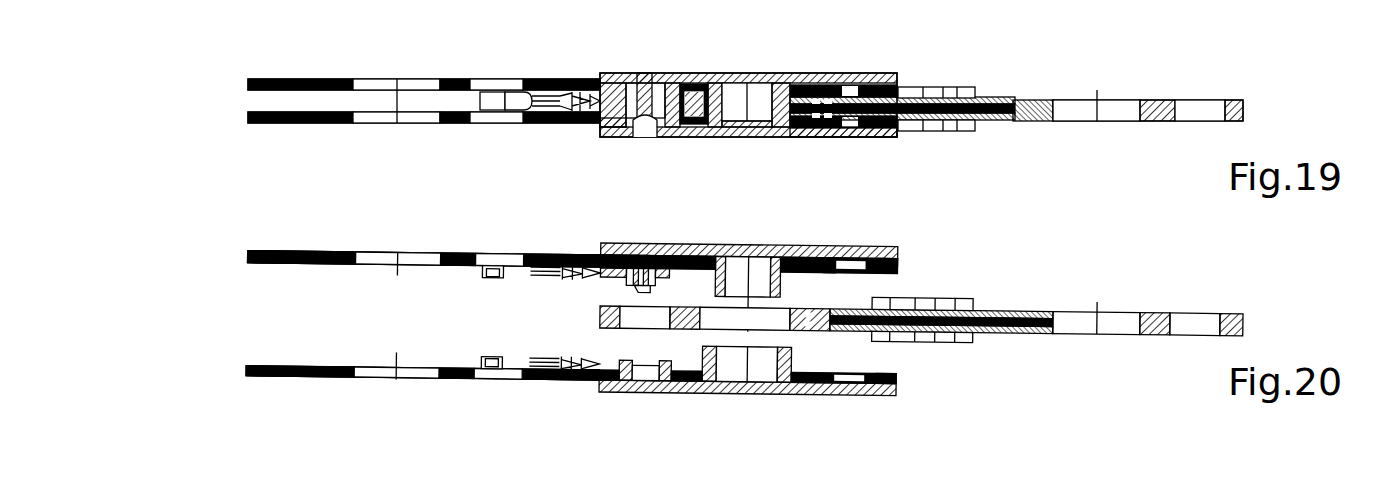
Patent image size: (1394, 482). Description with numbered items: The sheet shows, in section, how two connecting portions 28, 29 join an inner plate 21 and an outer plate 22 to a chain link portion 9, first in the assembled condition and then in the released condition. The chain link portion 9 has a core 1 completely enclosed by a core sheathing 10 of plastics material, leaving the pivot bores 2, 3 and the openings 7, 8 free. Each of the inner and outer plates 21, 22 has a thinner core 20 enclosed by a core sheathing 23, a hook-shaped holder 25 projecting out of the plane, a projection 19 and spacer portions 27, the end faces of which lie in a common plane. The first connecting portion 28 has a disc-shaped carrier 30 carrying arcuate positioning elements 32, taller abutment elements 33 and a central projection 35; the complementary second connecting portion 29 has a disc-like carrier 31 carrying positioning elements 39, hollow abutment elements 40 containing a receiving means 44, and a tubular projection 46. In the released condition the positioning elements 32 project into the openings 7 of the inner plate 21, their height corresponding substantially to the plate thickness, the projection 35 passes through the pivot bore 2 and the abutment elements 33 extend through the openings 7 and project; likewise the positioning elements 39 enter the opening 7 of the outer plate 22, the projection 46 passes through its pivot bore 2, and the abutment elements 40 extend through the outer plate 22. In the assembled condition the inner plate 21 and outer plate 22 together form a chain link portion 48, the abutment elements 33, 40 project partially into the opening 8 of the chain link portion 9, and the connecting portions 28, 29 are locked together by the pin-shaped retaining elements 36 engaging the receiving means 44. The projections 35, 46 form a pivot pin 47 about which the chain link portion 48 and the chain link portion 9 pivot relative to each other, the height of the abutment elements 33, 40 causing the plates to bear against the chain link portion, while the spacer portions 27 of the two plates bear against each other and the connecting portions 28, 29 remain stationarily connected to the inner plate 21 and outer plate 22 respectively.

In FIG. 19, the core 1 is at (994, 98).
In FIG. 19, the pivot bore 2 is at (1082, 122).
In FIG. 20, the pivot bore 2 is at (796, 250).
In FIG. 19, the pivot bore 3 is at (414, 84).
In FIG. 20, the pivot bore 3 is at (413, 255).
In FIG. 19, the opening 7 is at (1200, 122).
In FIG. 20, the opening 7 is at (676, 255).
In FIG. 19, the opening 8 is at (516, 92).
In FIG. 20, the opening 8 is at (493, 255).
In FIG. 19, the chain link portion 9 is at (1056, 82).
In FIG. 20, the chain link portion 9 is at (990, 341).
In FIG. 19, the core sheathing 10 is at (1150, 100).
In FIG. 19, the projection 19 is at (935, 90).
In FIG. 20, the projection 19 is at (945, 296).
In FIG. 19, the core 20 is at (336, 124).
In FIG. 20, the core 20 is at (300, 272).
In FIG. 19, the inner plate 21 is at (306, 72).
In FIG. 20, the inner plate 21 is at (246, 256).
In FIG. 19, the outer plate 22 is at (238, 120).
In FIG. 20, the outer plate 22 is at (415, 387).
In FIG. 19, the core sheathing 23 is at (270, 124).
In FIG. 20, the core sheathing 23 is at (320, 256).
In FIG. 19, the holder 25 is at (490, 92).
In FIG. 20, the holder 25 is at (495, 280).
In FIG. 19, the spacer portion 27 is at (582, 88).
In FIG. 20, the spacer portion 27 is at (560, 267).
In FIG. 19, the first connecting portion 28 is at (826, 68).
In FIG. 20, the first connecting portion 28 is at (758, 250).
In FIG. 19, the second connecting portion 29 is at (858, 142).
In FIG. 20, the second connecting portion 29 is at (745, 393).
In FIG. 19, the disc-shaped carrier 30 is at (872, 78).
In FIG. 20, the disc-shaped carrier 30 is at (832, 252).
In FIG. 19, the carrier 31 is at (886, 138).
In FIG. 20, the carrier 31 is at (846, 393).
In FIG. 20, the positioning element 32 is at (885, 251).
In FIG. 19, the abutment element 33 is at (618, 84).
In FIG. 20, the abutment element 33 is at (633, 255).
In FIG. 19, the projection 35 is at (728, 84).
In FIG. 20, the projection 35 is at (790, 287).
In FIG. 19, the pin-shaped retaining element 36 is at (646, 84).
In FIG. 20, the positioning element 39 is at (880, 389).
In FIG. 19, the abutment element 40 is at (612, 136).
In FIG. 20, the abutment element 40 is at (665, 391).
In FIG. 19, the receiving means 44 is at (642, 132).
In FIG. 20, the receiving means 44 is at (637, 391).
In FIG. 19, the tubular projection 46 is at (716, 138).
In FIG. 20, the tubular projection 46 is at (782, 392).
In FIG. 19, the pivot pin 47 is at (796, 138).
In FIG. 19, the chain link portion 48 is at (368, 72).